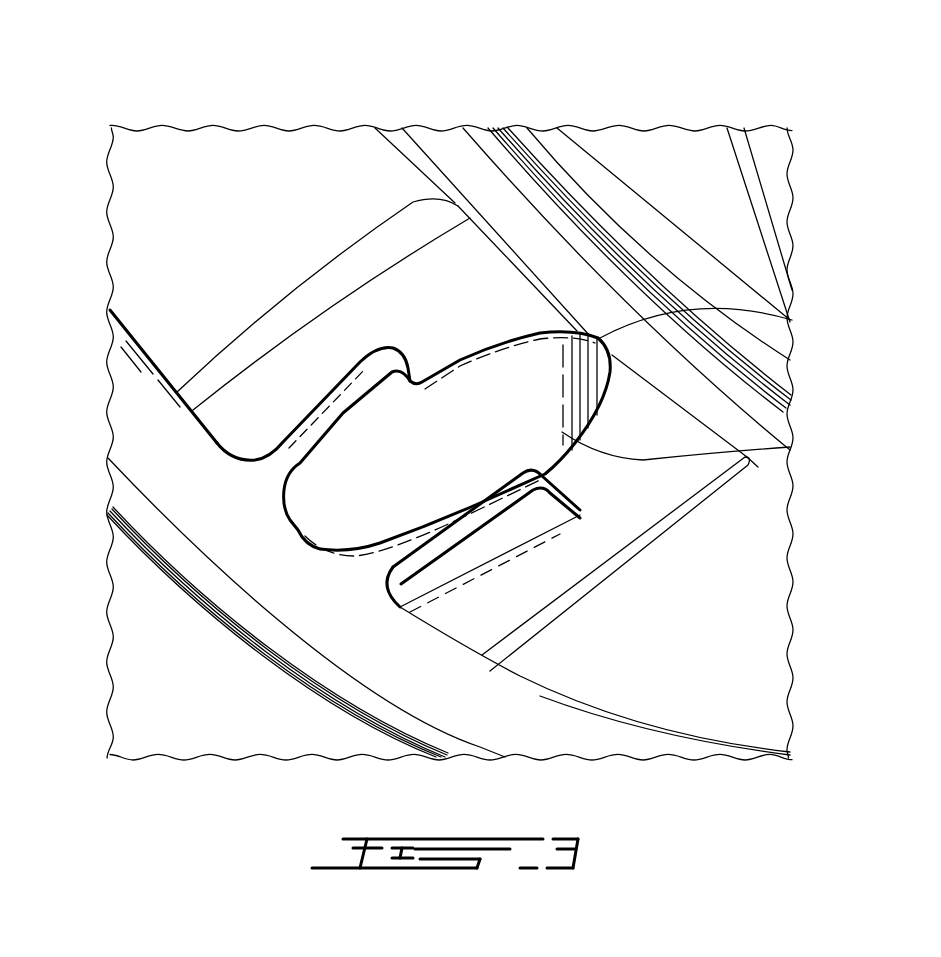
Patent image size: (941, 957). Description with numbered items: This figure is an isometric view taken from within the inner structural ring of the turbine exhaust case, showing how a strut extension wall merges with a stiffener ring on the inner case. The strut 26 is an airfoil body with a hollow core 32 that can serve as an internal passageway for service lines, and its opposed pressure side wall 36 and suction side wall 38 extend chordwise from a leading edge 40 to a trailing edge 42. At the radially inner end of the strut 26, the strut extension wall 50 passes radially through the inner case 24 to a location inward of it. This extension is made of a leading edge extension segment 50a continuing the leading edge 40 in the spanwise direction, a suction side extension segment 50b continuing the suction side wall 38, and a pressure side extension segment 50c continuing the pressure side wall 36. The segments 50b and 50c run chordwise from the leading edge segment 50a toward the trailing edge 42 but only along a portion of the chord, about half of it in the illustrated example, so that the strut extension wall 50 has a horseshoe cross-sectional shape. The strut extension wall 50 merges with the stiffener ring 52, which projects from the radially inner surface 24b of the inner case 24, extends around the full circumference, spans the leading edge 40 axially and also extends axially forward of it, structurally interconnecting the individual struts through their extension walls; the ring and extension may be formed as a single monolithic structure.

The inner case 24 is at (786, 588).
The radially inner surface 24b is at (740, 660).
The strut 26 is at (540, 312).
The hollow core 32 is at (478, 398).
The pressure side wall 36 is at (450, 363).
The suction side wall 38 is at (790, 447).
The leading edge 40 is at (300, 523).
The trailing edge 42 is at (792, 320).
The strut extension wall 50 is at (500, 581).
The leading edge extension segment 50a is at (304, 522).
The suction side extension segment 50b is at (490, 507).
The pressure side extension segment 50c is at (337, 396).
The stiffener ring 52 is at (520, 716).